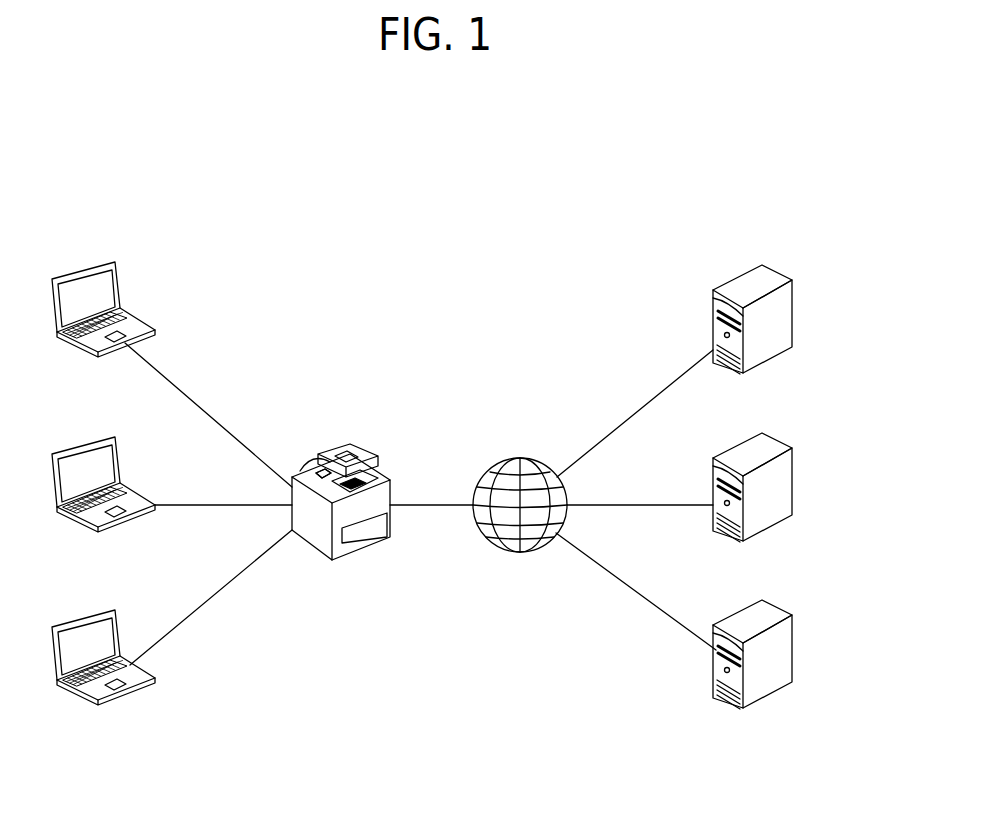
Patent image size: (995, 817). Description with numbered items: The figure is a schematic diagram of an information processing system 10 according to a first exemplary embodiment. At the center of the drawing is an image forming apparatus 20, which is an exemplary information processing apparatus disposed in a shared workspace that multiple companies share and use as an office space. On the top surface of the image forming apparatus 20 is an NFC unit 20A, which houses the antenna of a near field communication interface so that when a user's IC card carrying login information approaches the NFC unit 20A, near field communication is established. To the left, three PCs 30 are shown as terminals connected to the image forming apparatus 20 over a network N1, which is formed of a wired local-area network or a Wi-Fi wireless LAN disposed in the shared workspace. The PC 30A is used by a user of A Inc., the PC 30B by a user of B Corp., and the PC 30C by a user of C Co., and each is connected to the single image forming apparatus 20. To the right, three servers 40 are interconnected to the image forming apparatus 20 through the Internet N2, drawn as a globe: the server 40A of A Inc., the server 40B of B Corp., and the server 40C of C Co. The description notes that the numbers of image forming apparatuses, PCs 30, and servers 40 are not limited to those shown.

The information processing system 10 is at (575, 228).
The image forming apparatus 20 is at (340, 499).
The NFC unit 20A is at (322, 482).
The personal computers 30 is at (103, 455).
The PC 30A is at (72, 272).
The PC 30B is at (103, 455).
The PC 30C is at (103, 628).
The servers 40 is at (777, 457).
The server 40A is at (780, 270).
The server 40B is at (777, 457).
The server 40C is at (777, 624).
The network N1 is at (187, 396).
The Internet N2 is at (518, 458).